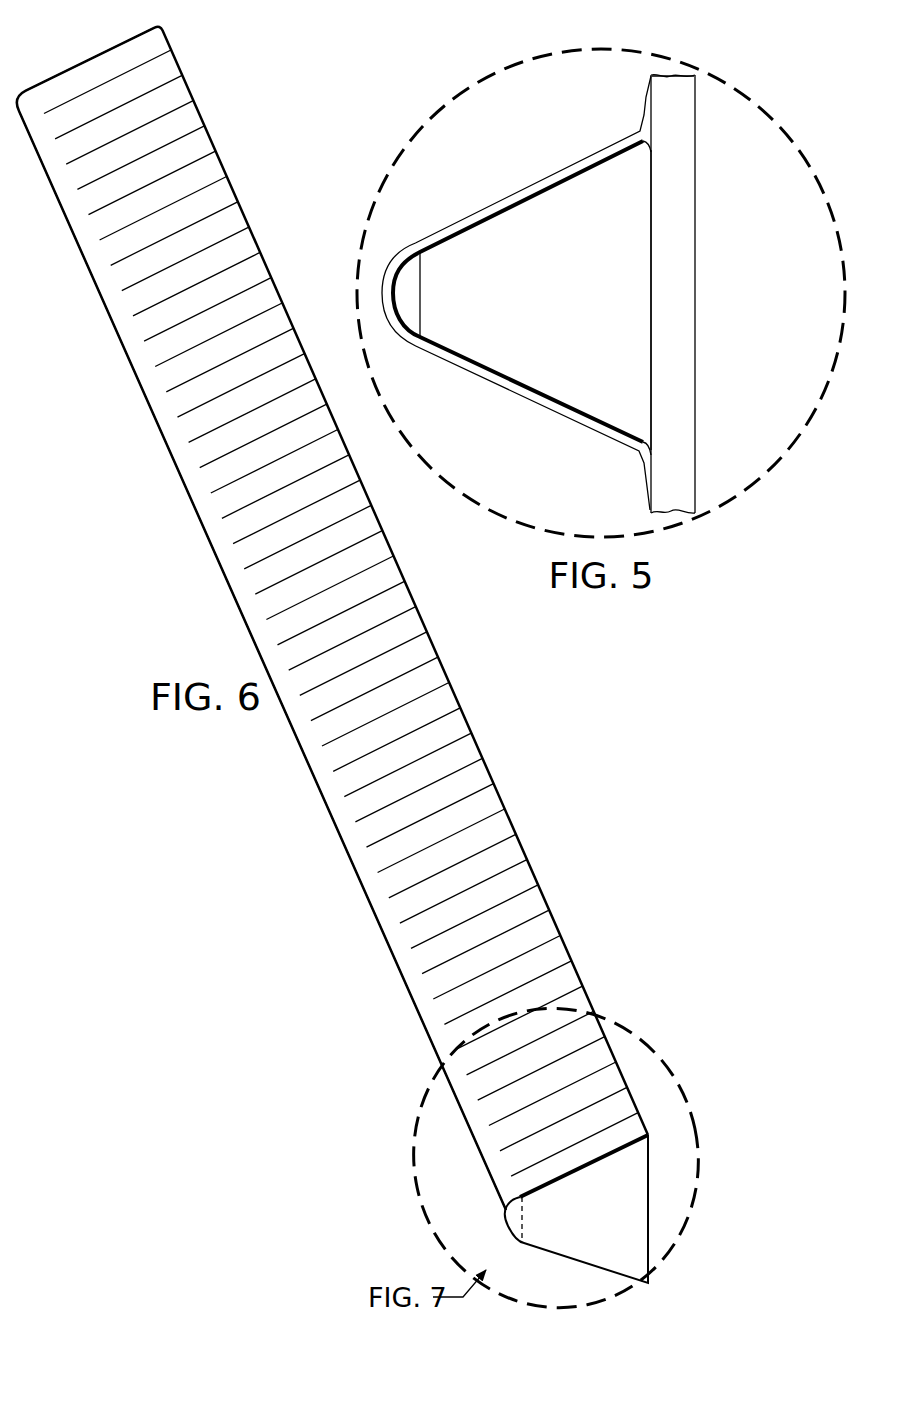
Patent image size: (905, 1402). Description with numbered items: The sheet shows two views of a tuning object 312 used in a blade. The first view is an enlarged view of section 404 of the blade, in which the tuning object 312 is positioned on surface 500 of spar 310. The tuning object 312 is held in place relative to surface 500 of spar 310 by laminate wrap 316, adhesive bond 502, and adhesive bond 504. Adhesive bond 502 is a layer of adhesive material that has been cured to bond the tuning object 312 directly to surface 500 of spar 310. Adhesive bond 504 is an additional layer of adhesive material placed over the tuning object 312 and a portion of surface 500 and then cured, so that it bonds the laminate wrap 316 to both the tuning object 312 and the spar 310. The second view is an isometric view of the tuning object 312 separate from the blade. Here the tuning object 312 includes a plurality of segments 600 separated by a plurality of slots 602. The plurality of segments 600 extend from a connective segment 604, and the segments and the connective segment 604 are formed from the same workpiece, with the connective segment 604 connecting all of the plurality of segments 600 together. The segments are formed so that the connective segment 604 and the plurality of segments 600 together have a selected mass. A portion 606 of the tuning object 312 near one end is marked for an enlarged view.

In FIG. 5, the spar 310 is at (669, 77).
In FIG. 5, the tuning object 312 is at (460, 243).
In FIG. 6, the tuning object 312 is at (97, 70).
In FIG. 5, the laminate wrap 316 is at (520, 190).
In FIG. 5, the section 404 is at (447, 98).
In FIG. 5, the surface 500 is at (696, 290).
In FIG. 5, the adhesive bond 502 is at (650, 290).
In FIG. 5, the adhesive bond 504 is at (558, 186).
In FIG. 6, the plurality of segments 600 is at (540, 896).
In FIG. 6, the plurality of slots 602 is at (565, 984).
In FIG. 6, the connective segment 604 is at (398, 973).
In FIG. 6, the portion 606 is at (425, 1196).